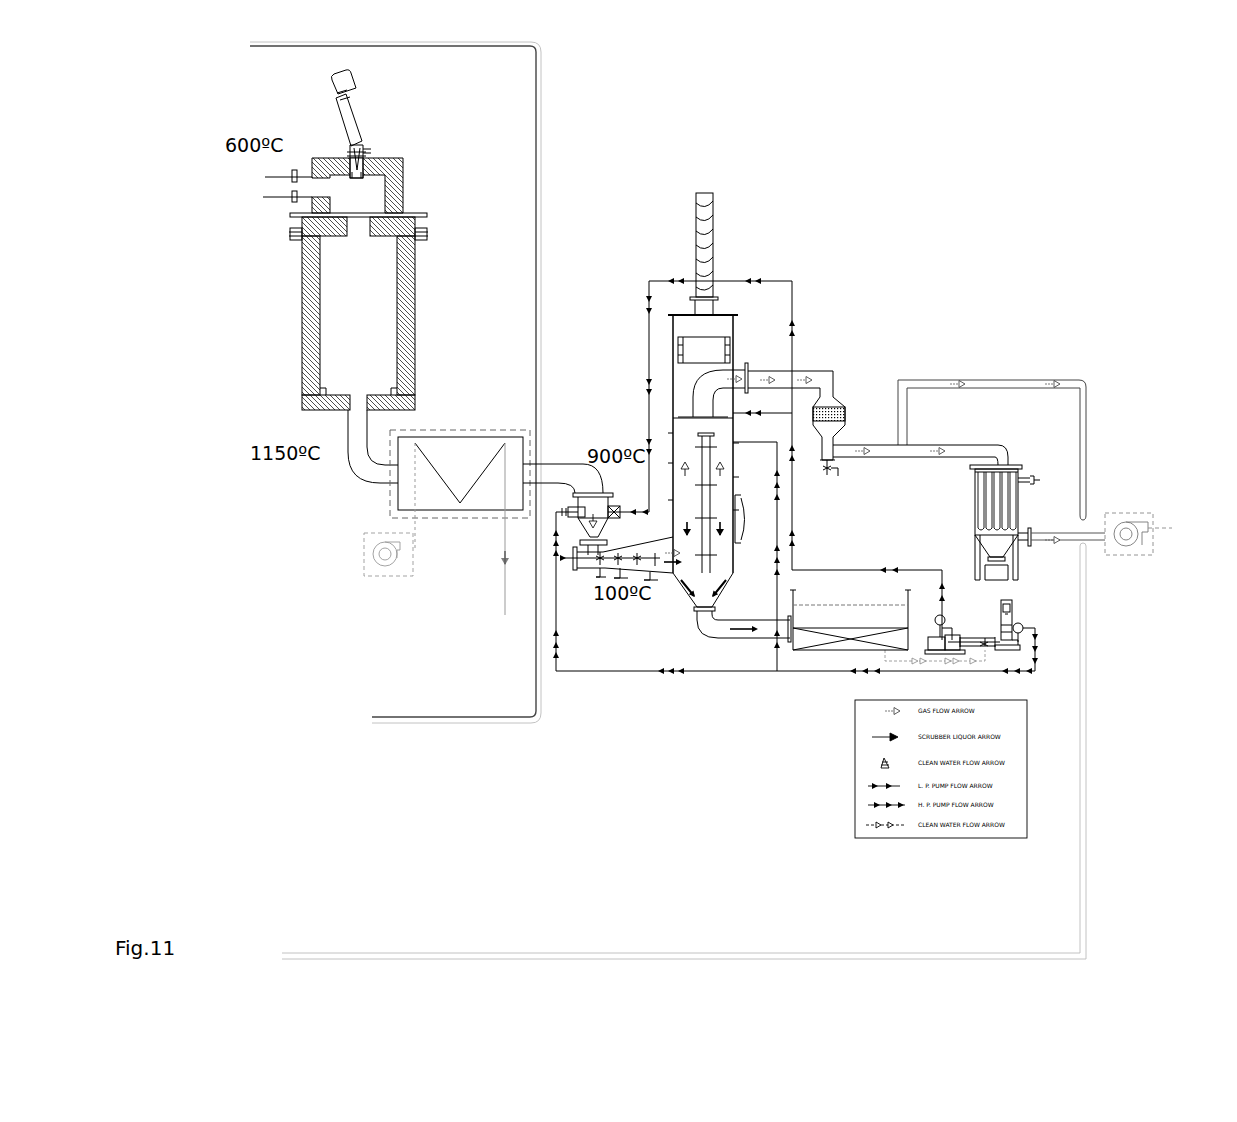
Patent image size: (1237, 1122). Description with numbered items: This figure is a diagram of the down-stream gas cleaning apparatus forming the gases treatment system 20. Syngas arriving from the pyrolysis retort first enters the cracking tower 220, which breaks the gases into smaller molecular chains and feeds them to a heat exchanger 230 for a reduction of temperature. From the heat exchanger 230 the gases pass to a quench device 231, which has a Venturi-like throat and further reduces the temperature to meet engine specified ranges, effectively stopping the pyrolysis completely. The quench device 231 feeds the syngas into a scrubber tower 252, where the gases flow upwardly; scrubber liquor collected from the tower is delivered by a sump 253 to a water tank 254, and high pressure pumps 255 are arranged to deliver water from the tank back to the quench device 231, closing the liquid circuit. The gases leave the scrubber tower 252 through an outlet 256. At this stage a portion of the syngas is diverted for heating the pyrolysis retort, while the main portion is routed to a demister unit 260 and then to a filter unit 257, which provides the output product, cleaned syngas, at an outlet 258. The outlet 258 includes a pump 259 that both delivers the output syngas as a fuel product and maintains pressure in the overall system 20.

The gases treatment system 20 is at (1108, 258).
The cracking tower 220 is at (422, 176).
The heat exchanger 230 is at (470, 410).
The quench device 231 is at (550, 458).
The scrubber tower 252 is at (729, 246).
The sump 253 is at (690, 608).
The water tank 254 is at (820, 664).
The high pressure pumps 255 is at (1047, 653).
The outlet 256 is at (784, 373).
The filter unit 257 is at (1014, 440).
The outlet 258 is at (1111, 505).
The pump 259 is at (1137, 513).
The demister unit 260 is at (838, 384).